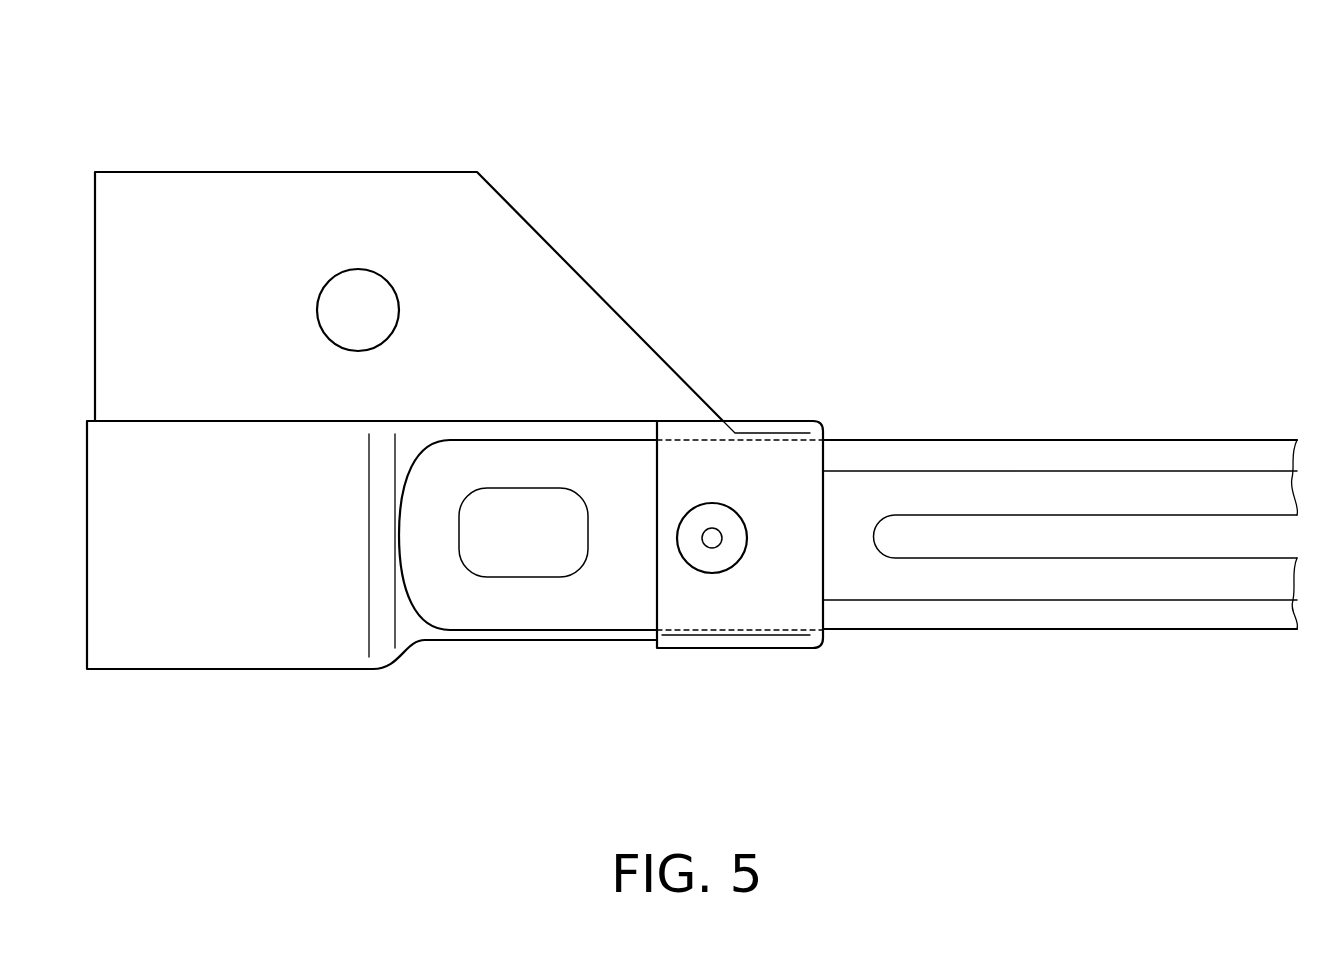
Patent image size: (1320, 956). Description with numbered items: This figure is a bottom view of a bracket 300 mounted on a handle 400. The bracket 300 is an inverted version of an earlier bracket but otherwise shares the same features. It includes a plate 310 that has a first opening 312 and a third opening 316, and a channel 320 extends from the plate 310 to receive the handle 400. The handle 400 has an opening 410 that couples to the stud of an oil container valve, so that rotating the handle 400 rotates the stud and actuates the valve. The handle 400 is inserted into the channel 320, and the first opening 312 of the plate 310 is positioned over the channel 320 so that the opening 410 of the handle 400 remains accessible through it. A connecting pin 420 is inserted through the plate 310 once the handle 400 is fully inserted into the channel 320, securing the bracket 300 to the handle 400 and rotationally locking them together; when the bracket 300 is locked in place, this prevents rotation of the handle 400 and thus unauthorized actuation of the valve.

The bracket 300 is at (218, 118).
The plate 310 is at (190, 535).
The first opening 312 is at (608, 609).
The third opening 316 is at (396, 290).
The channel 320 is at (658, 612).
The handle 400 is at (881, 632).
The opening 410 is at (468, 568).
The connecting pin 420 is at (718, 515).